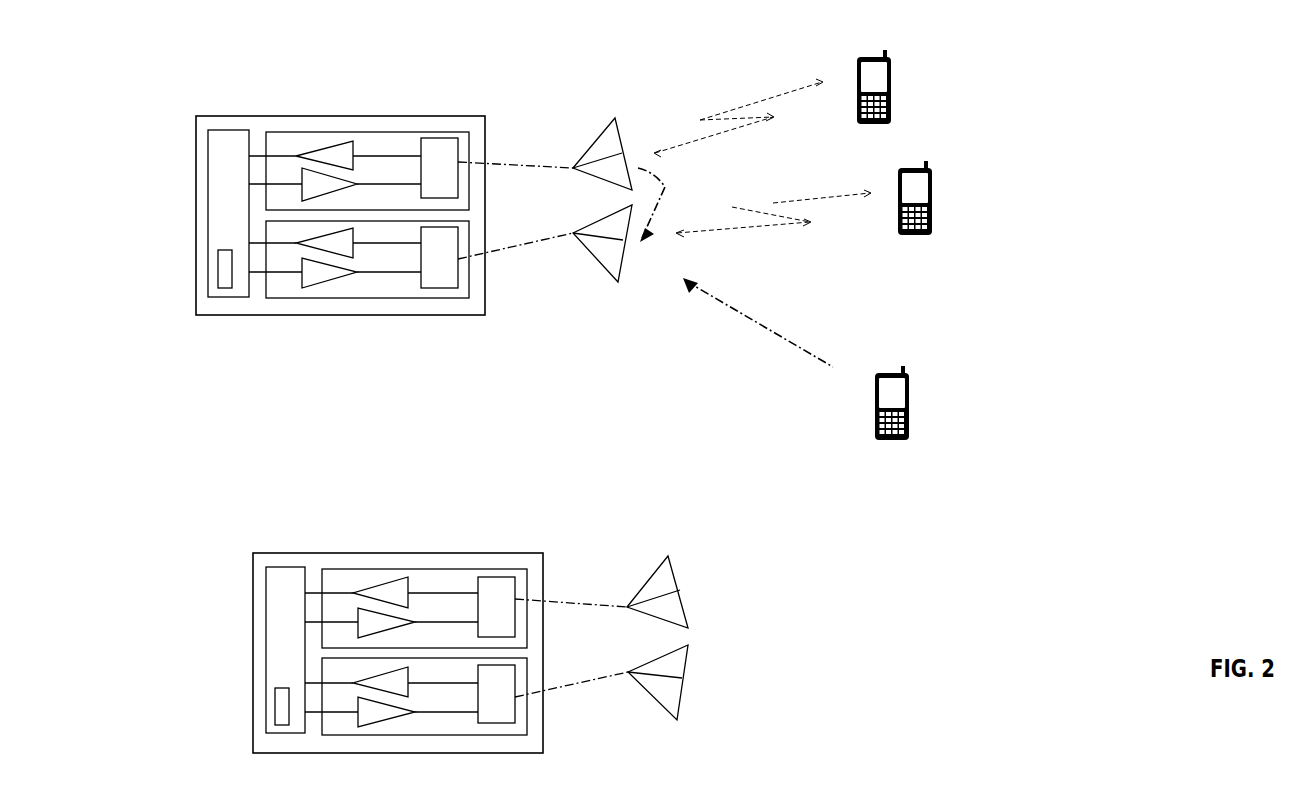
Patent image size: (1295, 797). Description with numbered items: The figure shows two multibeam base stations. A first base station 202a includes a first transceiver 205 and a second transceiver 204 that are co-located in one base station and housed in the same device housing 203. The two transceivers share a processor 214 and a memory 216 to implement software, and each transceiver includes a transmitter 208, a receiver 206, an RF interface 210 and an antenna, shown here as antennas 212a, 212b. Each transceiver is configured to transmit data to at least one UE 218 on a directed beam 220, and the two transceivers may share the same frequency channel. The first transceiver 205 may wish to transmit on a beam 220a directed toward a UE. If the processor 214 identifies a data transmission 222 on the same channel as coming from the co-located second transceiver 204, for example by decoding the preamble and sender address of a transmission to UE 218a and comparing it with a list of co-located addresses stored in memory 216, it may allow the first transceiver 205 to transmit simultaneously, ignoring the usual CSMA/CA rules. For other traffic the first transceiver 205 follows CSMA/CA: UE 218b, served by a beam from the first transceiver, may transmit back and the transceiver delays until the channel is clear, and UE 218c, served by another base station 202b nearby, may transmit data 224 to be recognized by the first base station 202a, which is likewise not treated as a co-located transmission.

The first base station 202a is at (158, 142).
The another base station 202b is at (228, 617).
The device housing 203 is at (437, 316).
The second transceiver 204 is at (293, 132).
The first transceiver 205 is at (293, 300).
The receiver 206 is at (335, 143).
The transmitter 208 is at (357, 185).
The RF interface 210 is at (443, 143).
The antenna 212a is at (600, 130).
The antenna 212b is at (602, 268).
The processor 214 is at (220, 145).
The memory 216 is at (222, 258).
The UE 218 is at (898, 222).
The UE 218a is at (890, 103).
The UE 218b is at (932, 197).
The UE 218c is at (909, 415).
The directed beam 220 is at (767, 87).
The beam 220a is at (773, 203).
The data transmission 222 is at (685, 200).
The data 224 is at (792, 342).